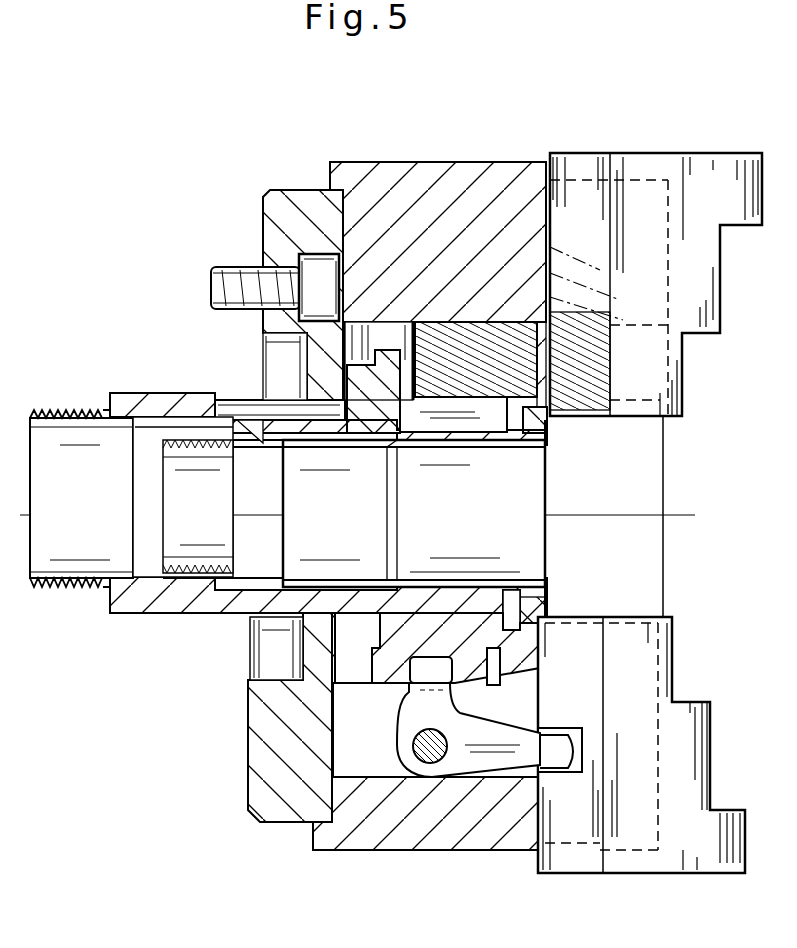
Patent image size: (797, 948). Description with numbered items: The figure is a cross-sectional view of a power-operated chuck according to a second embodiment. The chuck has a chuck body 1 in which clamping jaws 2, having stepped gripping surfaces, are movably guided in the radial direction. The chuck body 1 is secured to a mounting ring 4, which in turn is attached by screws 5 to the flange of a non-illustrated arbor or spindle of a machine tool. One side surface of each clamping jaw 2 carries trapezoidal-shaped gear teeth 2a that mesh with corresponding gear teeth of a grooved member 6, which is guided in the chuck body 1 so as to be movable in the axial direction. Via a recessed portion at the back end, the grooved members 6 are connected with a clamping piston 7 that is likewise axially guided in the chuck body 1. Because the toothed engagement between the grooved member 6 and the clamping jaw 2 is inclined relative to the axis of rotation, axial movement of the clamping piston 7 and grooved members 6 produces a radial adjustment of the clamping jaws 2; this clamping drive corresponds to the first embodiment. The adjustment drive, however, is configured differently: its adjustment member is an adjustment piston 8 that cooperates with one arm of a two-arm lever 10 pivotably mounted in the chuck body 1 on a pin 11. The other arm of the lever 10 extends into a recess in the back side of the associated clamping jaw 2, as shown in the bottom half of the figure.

The chuck body 1 is at (508, 210).
The clamping jaw 2 is at (675, 168).
The trapezoidal-shaped gear teeth 2a is at (585, 378).
The mounting ring 4 is at (288, 203).
The screw 5 is at (227, 275).
The grooved member 6 is at (452, 322).
The clamping piston 7 is at (387, 363).
The adjustment piston 8 is at (397, 667).
The two-arm lever 10 is at (480, 757).
The pin 11 is at (422, 763).